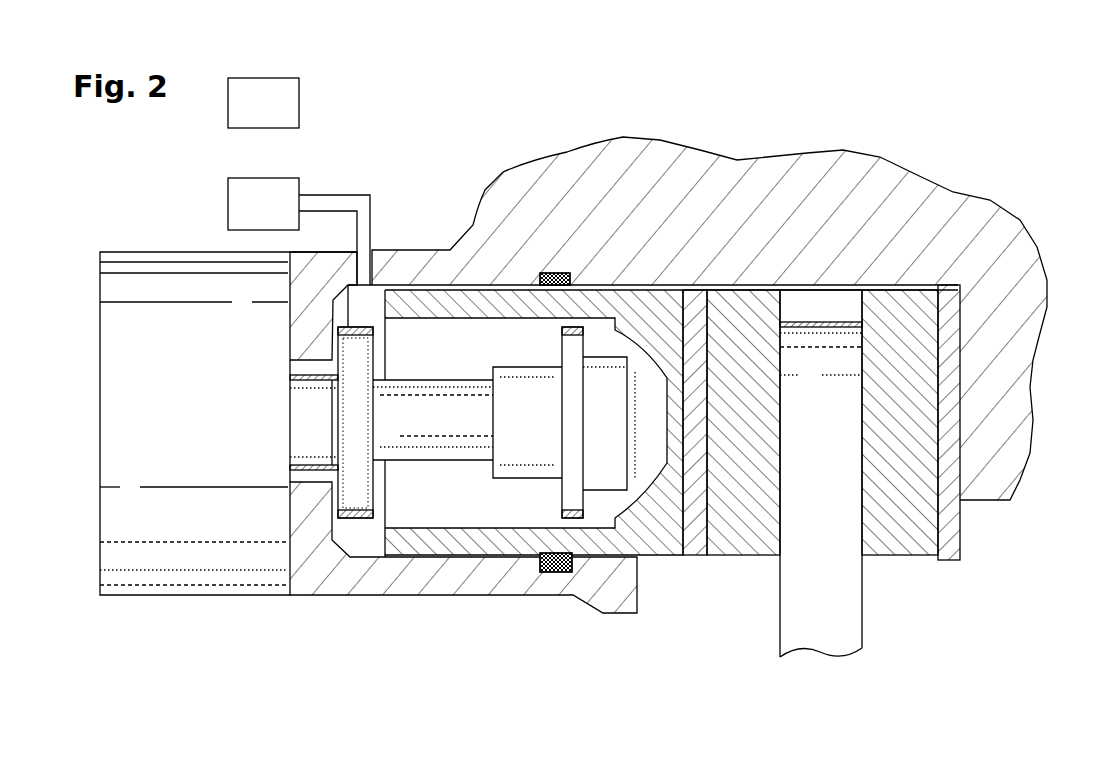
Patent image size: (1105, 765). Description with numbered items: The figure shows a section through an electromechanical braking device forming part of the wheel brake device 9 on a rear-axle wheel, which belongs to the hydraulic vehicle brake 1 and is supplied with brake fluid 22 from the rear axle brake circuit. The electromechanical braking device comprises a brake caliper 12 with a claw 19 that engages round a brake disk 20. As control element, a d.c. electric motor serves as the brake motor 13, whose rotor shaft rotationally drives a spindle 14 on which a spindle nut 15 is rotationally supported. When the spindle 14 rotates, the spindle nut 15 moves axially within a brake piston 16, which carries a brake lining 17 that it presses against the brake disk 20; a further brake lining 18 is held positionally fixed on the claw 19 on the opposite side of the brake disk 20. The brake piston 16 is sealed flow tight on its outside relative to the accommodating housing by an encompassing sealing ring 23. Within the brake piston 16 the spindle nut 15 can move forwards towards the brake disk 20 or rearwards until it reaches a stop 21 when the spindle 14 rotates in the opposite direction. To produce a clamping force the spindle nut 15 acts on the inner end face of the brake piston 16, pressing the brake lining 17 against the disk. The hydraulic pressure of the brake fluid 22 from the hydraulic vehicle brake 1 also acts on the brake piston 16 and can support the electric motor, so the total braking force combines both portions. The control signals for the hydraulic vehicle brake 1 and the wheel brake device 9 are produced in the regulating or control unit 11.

The hydraulic vehicle brake 1 is at (227, 200).
The wheel brake device 9 is at (962, 149).
The regulating or control unit 11 is at (299, 103).
The brake caliper 12 is at (737, 177).
The brake motor 13 is at (195, 575).
The spindle 14 is at (466, 455).
The spindle nut 15 is at (510, 480).
The brake piston 16 is at (430, 535).
The brake lining 17 is at (742, 556).
The further brake lining 18 is at (897, 556).
The claw 19 is at (1012, 385).
The brake disk 20 is at (817, 640).
The stop 21 is at (352, 522).
The brake fluid 22 is at (373, 550).
The sealing ring 23 is at (555, 574).